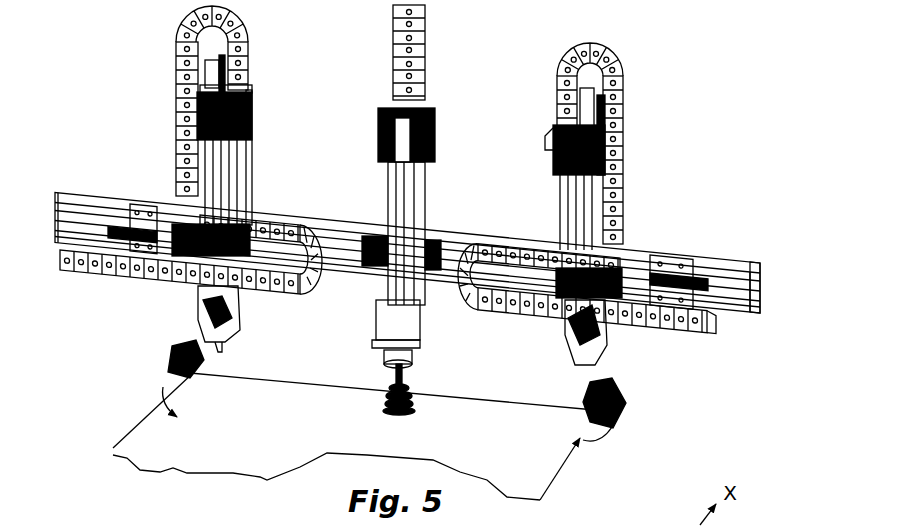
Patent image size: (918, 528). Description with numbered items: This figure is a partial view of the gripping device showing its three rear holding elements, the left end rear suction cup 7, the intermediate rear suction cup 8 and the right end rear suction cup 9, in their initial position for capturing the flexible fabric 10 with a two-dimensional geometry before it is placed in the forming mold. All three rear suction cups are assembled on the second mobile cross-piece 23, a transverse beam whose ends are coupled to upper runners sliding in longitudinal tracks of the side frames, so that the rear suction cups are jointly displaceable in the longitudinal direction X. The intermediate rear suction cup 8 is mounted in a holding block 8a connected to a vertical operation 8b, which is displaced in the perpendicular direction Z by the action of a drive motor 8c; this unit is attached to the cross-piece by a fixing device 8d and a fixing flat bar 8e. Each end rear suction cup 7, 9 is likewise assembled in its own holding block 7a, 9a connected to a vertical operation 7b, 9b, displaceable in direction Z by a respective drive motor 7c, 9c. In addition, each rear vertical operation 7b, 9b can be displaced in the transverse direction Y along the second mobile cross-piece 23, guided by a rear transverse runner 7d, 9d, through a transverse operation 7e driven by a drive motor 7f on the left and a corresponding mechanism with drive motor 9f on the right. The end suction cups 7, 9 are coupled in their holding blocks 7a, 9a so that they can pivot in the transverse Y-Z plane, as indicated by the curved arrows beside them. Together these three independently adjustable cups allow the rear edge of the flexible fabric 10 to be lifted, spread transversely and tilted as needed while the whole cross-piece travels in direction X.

The left end rear suction cup 7 is at (180, 363).
The holding block 7a is at (240, 307).
The vertical operation 7b is at (250, 152).
The drive motor 7c is at (218, 58).
The rear transverse runner 7d is at (170, 230).
The transverse operation 7e is at (170, 288).
The drive motor 7f is at (123, 227).
The intermediate rear suction cup 8 is at (410, 392).
The holding block 8a is at (373, 313).
The vertical operation 8b is at (425, 173).
The drive motor 8c is at (405, 80).
The fixing device 8d is at (372, 243).
The fixing flat bar 8e is at (430, 268).
The right end rear suction cup 9 is at (617, 422).
The holding block 9a is at (607, 347).
The vertical operation 9b is at (553, 188).
The drive motor 9c is at (590, 100).
The rear transverse runner 9d is at (623, 257).
The drive motor 9f is at (683, 283).
The flexible fabric 10 is at (143, 440).
The second mobile cross-piece 23 is at (747, 258).